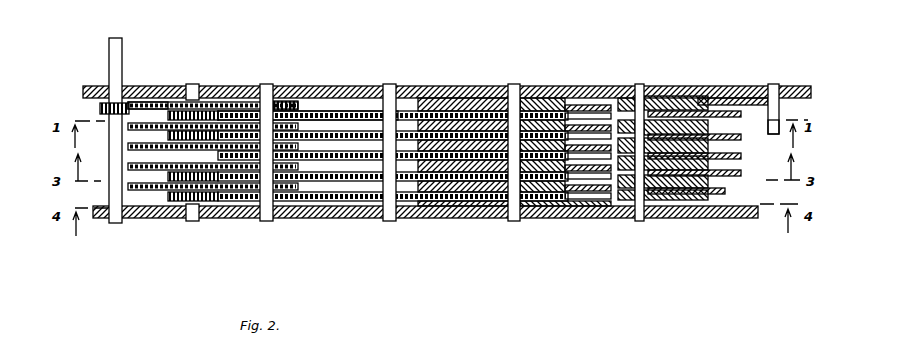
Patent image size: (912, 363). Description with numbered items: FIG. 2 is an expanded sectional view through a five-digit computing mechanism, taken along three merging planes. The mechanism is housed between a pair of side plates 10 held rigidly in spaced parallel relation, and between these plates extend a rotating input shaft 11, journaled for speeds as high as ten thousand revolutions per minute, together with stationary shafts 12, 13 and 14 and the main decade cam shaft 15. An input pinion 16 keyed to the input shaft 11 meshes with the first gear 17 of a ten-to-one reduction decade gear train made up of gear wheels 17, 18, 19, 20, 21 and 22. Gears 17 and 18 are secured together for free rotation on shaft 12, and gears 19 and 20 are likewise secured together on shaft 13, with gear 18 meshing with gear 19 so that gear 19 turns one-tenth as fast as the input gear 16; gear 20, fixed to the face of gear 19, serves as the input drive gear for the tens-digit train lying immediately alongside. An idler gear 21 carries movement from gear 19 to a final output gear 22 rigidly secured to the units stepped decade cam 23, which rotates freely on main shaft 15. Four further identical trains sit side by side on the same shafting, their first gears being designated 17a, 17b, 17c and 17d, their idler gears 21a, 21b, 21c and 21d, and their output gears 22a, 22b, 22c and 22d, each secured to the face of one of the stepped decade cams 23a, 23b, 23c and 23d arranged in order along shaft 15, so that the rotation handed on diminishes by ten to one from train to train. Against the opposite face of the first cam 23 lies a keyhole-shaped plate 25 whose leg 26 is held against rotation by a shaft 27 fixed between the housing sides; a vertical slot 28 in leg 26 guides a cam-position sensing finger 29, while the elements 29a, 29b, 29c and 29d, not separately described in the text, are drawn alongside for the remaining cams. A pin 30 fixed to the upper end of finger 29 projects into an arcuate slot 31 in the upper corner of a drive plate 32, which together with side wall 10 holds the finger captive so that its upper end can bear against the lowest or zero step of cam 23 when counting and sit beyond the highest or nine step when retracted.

The side plates 10 is at (150, 80).
The input shaft 11 is at (101, 48).
The stationary shaft 12 is at (185, 213).
The stationary shaft 13 is at (258, 213).
The stationary shaft 14 is at (380, 213).
The main decade cam shaft 15 is at (505, 213).
The input pinion 16 is at (92, 100).
The first gear 17 is at (217, 120).
The first gear 17a is at (232, 104).
The first gear 17b is at (243, 123).
The first gear 17c is at (137, 185).
The first gear 17d is at (152, 173).
The gear wheel 18 is at (165, 94).
The gear wheel 19 is at (298, 103).
The gear wheel 20 is at (273, 93).
The idler gear 21 is at (325, 123).
The idler gear 21a is at (345, 143).
The idler gear 21b is at (358, 123).
The idler gear 21c is at (325, 173).
The idler gear 21d is at (352, 193).
The final output gear 22 is at (460, 112).
The final output gear 22a is at (478, 132).
The final output gear 22b is at (490, 152).
The final output gear 22c is at (472, 184).
The final output gear 22d is at (488, 198).
The stepped decade cam 23 is at (530, 150).
The stepped decade cam 23a is at (546, 140).
The stepped decade cam 23b is at (560, 165).
The stepped decade cam 23c is at (565, 163).
The stepped decade cam 23d is at (568, 178).
The keyhole-shaped plate 25 is at (418, 90).
The leg 26 is at (764, 78).
The shaft 27 is at (763, 122).
The slot 28 is at (742, 90).
The cam-position sensing finger 29 is at (668, 115).
The arm 29a is at (690, 126).
The block portion 29b is at (700, 190).
The block portion 29c is at (670, 180).
The block portion 29d is at (650, 160).
The fixed pin 30 is at (631, 80).
The arcuate slot 31 is at (630, 100).
The drive plate 32 is at (700, 90).